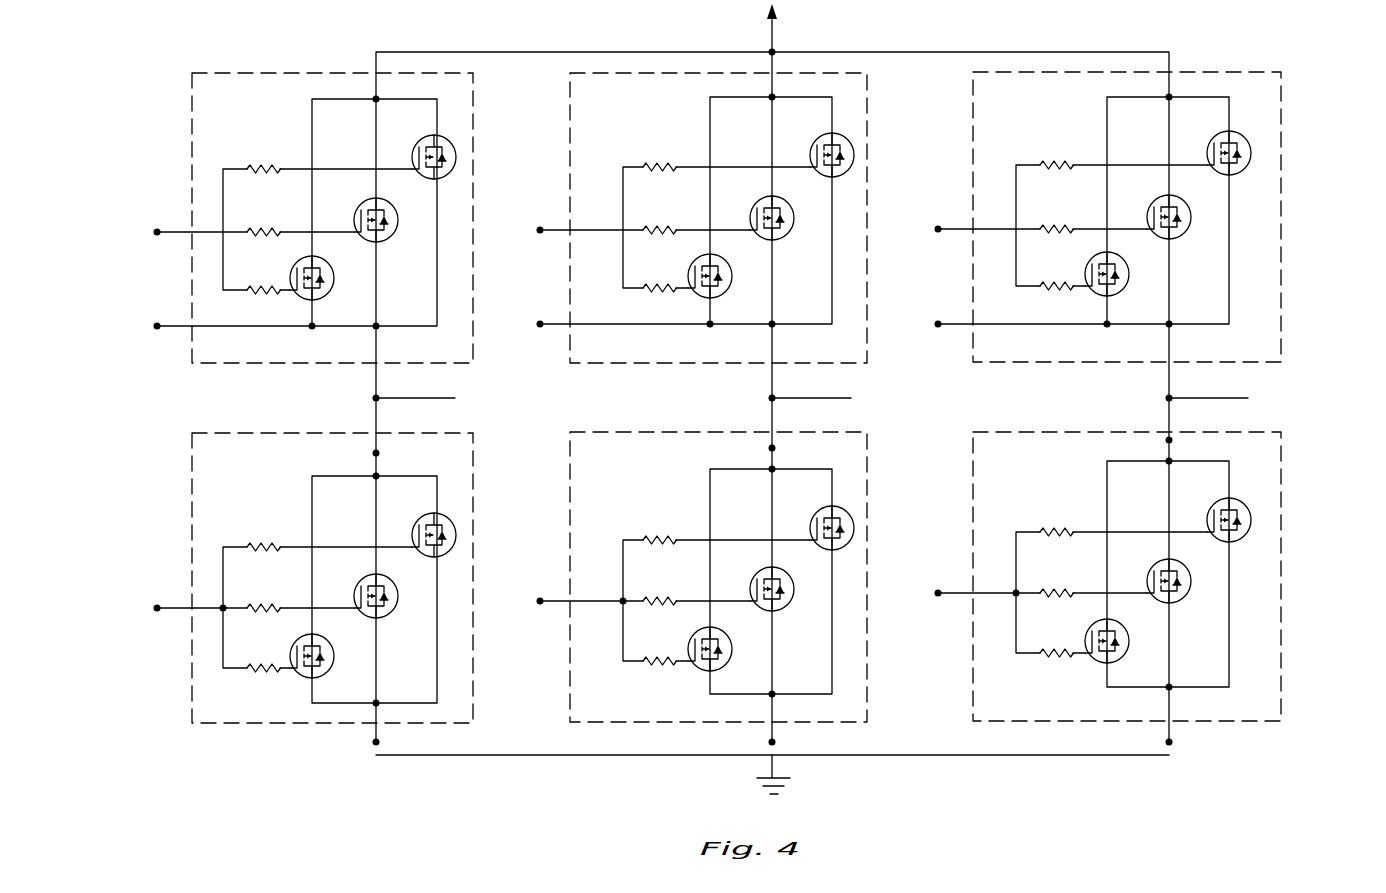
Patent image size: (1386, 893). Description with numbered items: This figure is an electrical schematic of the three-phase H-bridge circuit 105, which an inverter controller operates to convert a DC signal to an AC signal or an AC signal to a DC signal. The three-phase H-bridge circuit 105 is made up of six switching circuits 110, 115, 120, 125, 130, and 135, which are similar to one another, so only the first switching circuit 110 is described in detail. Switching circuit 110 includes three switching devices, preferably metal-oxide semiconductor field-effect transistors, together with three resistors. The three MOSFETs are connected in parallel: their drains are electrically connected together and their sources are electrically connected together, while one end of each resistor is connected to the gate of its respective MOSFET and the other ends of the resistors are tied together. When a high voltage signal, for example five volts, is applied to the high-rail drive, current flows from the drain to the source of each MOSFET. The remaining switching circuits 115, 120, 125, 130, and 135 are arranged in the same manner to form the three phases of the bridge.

The three-phase H-bridge circuit 105 is at (1227, 753).
The switching circuit 110 is at (238, 73).
The switching circuit 115 is at (585, 72).
The switching circuit 120 is at (1015, 71).
The switching circuit 125 is at (238, 433).
The switching circuit 130 is at (716, 431).
The switching circuit 135 is at (1110, 431).